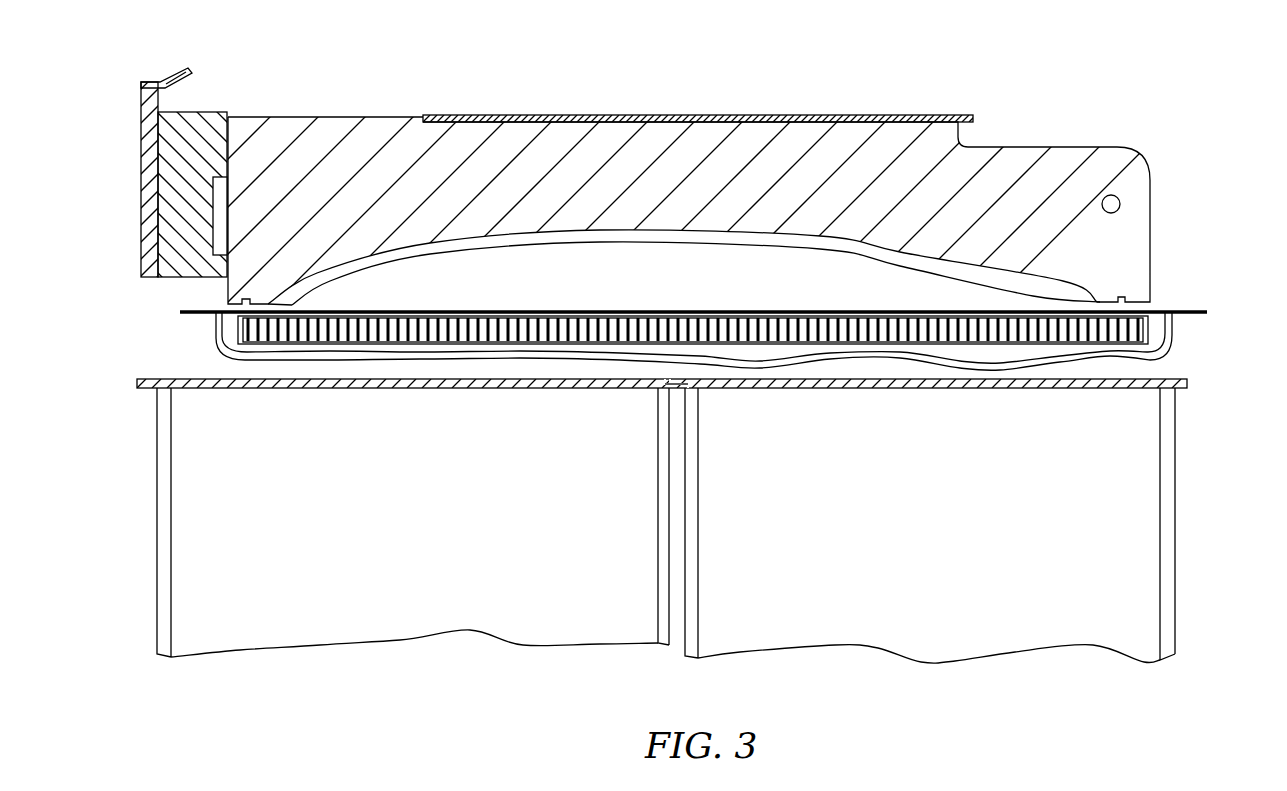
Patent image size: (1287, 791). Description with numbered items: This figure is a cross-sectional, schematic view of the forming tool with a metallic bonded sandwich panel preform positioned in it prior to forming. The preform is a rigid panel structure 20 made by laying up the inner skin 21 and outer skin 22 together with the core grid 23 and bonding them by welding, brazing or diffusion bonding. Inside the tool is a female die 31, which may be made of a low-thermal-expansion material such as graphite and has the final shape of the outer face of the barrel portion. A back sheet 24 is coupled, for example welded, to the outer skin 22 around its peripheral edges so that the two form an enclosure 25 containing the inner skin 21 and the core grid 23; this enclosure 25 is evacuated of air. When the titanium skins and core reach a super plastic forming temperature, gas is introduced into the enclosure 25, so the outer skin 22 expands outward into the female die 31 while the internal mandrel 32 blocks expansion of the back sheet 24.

The panel structure 20 is at (1180, 343).
The inner skin 21 is at (410, 345).
The outer skin 22 is at (385, 311).
The core grid material 23 is at (535, 332).
The back sheet 24 is at (318, 361).
The enclosure 25 is at (474, 349).
The female die 31 is at (358, 145).
The internal mandrel 32 is at (218, 390).